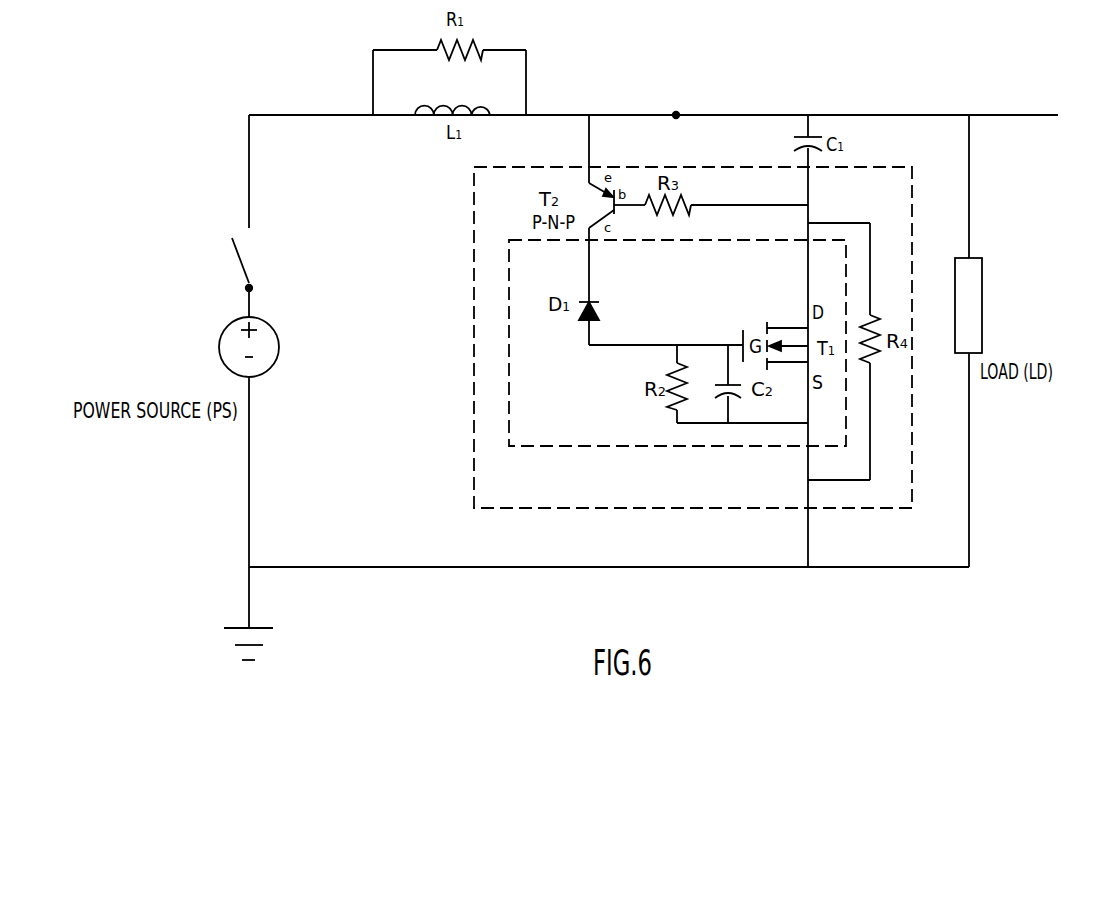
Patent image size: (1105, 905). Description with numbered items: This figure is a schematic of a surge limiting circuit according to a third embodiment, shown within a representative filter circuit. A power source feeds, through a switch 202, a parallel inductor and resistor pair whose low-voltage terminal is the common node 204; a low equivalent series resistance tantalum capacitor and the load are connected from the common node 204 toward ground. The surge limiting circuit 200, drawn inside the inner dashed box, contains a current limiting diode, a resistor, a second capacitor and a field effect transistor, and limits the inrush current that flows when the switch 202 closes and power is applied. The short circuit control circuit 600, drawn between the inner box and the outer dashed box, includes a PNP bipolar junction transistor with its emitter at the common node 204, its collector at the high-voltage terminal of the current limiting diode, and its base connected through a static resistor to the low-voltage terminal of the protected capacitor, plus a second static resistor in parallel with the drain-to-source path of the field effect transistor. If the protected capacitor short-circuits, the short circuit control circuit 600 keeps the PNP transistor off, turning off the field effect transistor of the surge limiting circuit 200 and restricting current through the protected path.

The switch 202 is at (241, 279).
The common node 204 is at (676, 113).
The short circuit control circuit 600 is at (474, 227).
The surge limiting circuit 200 is at (541, 448).